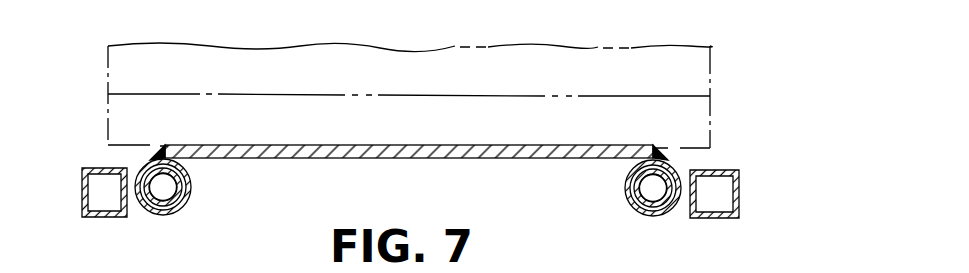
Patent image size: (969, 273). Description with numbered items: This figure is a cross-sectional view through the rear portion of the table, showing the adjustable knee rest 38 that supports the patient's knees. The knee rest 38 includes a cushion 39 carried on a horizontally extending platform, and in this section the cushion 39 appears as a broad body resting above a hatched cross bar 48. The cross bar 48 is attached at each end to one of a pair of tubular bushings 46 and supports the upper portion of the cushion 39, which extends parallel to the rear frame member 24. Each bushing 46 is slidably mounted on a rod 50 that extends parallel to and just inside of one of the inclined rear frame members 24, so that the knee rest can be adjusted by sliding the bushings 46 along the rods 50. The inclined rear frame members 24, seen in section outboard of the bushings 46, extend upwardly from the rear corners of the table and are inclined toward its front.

The knee rest 38 is at (100, 100).
The cushion 39 is at (680, 121).
The cross bar 48 is at (441, 160).
The tubular bushing 46 is at (176, 208).
The rod 50 is at (183, 185).
The inclined rear frame member 24 is at (108, 215).